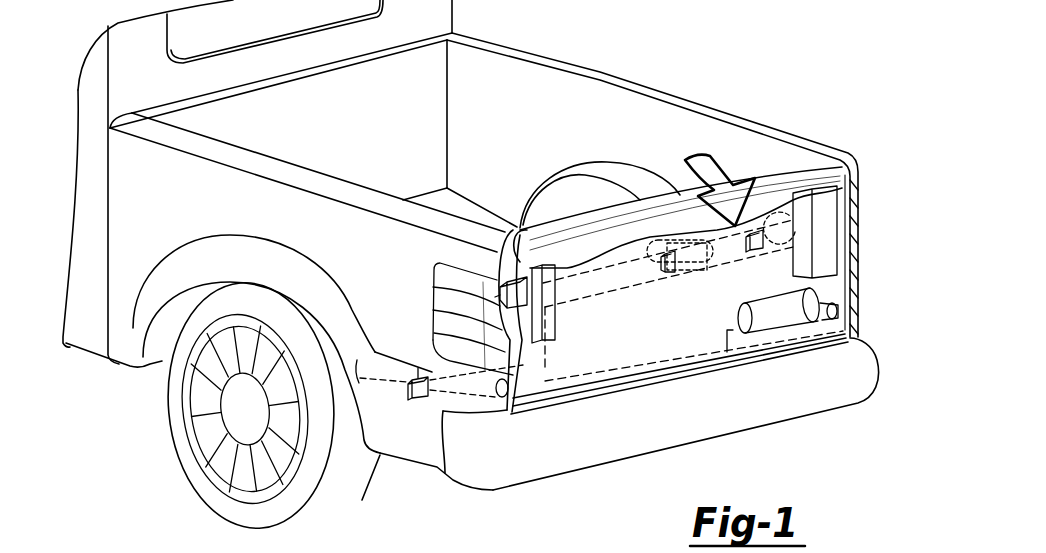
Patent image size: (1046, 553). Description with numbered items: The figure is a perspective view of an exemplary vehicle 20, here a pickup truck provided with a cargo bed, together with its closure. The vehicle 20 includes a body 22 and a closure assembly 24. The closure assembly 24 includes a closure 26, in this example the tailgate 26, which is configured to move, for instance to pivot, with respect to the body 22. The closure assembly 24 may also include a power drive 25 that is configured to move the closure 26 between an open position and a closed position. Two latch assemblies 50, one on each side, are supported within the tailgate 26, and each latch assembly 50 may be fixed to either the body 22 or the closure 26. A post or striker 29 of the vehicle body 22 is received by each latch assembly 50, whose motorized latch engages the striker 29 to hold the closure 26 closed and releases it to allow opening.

The vehicle 20 is at (527, 78).
The body 22 is at (623, 80).
The closure assembly 24 is at (693, 310).
The power drive 25 is at (785, 312).
The closure 26 is at (648, 336).
The striker 29 is at (500, 297).
The latch assembly 50 is at (845, 213).